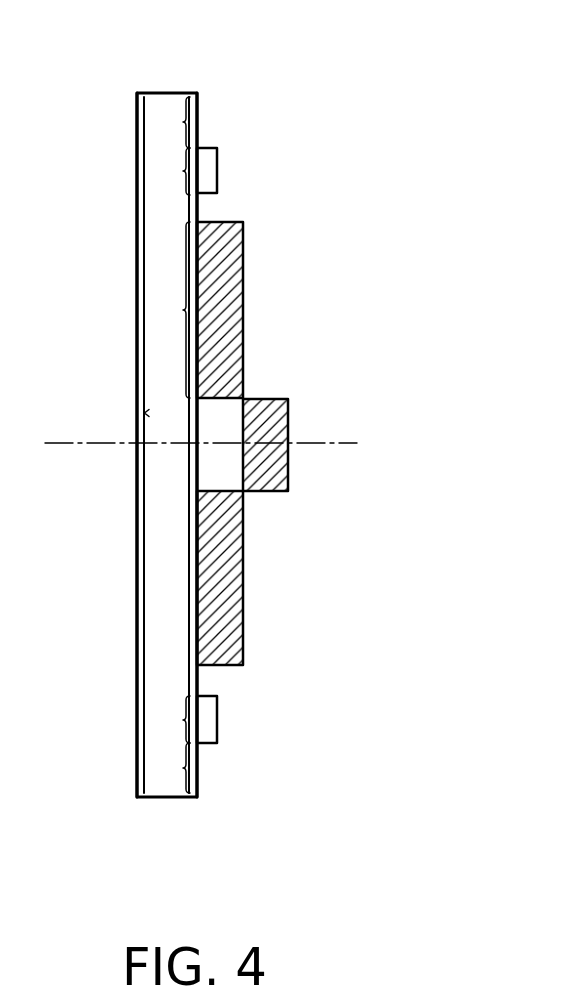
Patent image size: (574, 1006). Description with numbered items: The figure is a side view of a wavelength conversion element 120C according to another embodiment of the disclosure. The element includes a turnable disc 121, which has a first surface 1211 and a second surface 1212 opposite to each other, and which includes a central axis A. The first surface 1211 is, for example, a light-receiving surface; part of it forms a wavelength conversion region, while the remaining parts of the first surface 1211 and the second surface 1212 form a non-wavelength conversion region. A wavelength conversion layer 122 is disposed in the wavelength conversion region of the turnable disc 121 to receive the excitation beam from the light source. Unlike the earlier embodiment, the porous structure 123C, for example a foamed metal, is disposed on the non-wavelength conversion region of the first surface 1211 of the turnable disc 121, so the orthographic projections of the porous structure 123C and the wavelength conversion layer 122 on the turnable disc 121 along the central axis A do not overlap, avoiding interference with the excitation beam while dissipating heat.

The wavelength conversion element 120C is at (243, 444).
The turnable disc 121 is at (164, 444).
The first surface 1211 is at (211, 106).
The second surface 1212 is at (122, 109).
The wavelength conversion layer 122 is at (212, 172).
The porous structure 123C is at (228, 309).
The central axis A is at (214, 445).